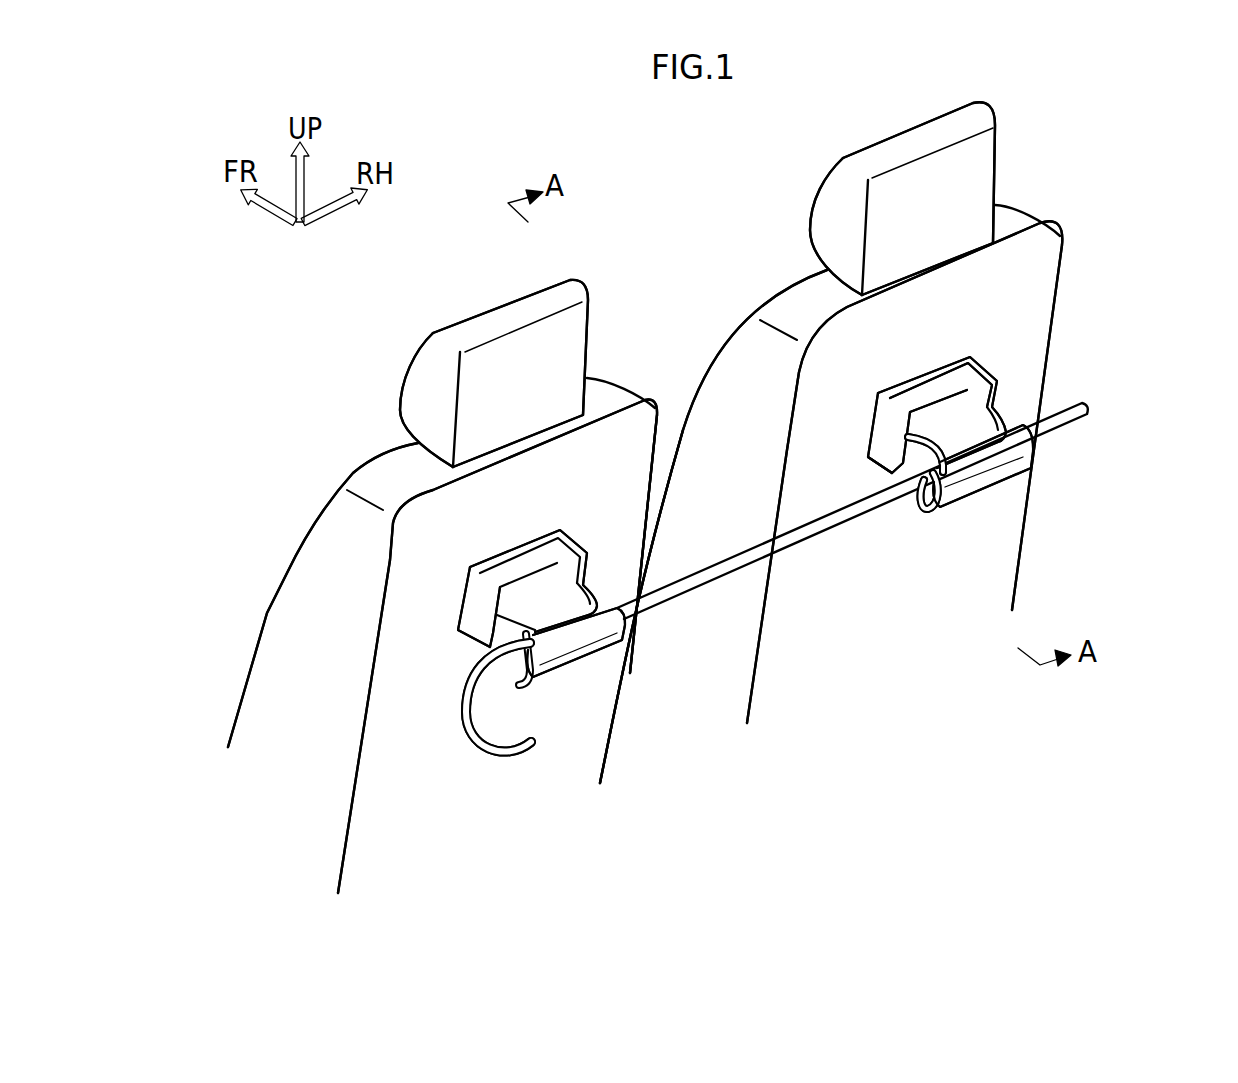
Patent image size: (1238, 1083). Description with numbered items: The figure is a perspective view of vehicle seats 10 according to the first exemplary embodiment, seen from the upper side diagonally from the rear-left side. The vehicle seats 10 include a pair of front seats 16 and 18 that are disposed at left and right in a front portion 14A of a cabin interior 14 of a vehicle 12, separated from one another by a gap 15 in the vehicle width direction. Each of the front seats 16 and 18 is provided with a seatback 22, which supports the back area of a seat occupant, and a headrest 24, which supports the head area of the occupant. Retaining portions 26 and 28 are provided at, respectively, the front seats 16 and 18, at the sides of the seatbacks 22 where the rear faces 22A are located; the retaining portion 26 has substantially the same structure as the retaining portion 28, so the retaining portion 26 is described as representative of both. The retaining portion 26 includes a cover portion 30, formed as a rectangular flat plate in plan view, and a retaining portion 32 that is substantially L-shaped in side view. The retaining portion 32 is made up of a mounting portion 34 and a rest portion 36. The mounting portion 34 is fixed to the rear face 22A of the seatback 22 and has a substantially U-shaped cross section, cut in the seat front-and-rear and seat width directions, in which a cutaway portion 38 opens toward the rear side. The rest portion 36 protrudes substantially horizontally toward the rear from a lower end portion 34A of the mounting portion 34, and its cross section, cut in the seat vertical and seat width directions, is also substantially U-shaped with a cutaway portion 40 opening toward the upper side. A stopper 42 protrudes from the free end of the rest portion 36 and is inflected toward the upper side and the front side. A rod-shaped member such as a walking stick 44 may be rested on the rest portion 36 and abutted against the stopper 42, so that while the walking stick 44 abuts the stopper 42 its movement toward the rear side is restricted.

The vehicle seats 10 is at (709, 497).
The vehicle 12 is at (1153, 139).
The cabin interior 14 is at (758, 482).
The front portion 14A is at (736, 245).
The gap 15 is at (667, 427).
The front seat 16 is at (1074, 202).
The front seat 18 is at (624, 311).
The seatback 22 is at (1040, 318).
The rear face 22A is at (1040, 282).
The headrest 24 is at (980, 160).
The retaining portion 26 is at (949, 353).
The retaining portion 28 is at (537, 522).
The cover portion 30 is at (1005, 404).
The retaining portion 32 is at (876, 386).
The mounting portion 34 is at (878, 440).
The lower end portion 34A is at (878, 462).
The rest portion 36 is at (930, 512).
The cutaway portion 38 is at (925, 380).
The cutaway portion 40 is at (913, 462).
The stopper 42 is at (1020, 453).
The walking stick 44 is at (698, 577).